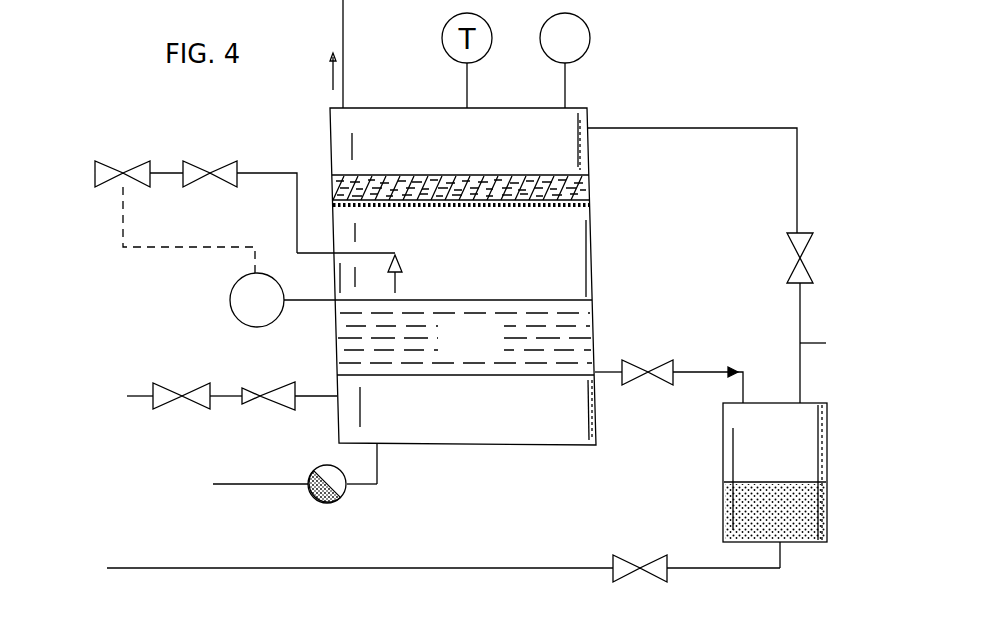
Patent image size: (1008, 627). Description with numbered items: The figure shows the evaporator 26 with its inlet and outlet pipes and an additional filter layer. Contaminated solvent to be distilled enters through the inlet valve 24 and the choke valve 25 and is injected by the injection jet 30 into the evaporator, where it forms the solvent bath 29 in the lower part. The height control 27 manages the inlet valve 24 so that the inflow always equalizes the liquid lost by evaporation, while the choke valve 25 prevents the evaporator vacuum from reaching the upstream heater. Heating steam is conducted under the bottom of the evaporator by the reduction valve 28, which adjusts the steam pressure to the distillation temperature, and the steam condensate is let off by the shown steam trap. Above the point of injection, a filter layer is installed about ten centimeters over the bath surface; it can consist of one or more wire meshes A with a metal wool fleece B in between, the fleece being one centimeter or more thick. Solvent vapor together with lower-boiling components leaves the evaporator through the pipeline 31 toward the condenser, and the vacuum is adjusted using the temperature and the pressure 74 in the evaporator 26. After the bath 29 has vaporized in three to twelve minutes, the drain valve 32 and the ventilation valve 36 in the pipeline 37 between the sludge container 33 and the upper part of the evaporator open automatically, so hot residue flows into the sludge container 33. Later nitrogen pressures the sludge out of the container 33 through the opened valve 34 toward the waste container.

The inlet valve 24 is at (113, 160).
The choke valve 25 is at (195, 160).
The evaporator 26 is at (439, 147).
The height control 27 is at (230, 300).
The reduction valve 28 is at (260, 393).
The solvent bath 29 is at (464, 337).
The injection jet 30 is at (398, 253).
The pipeline 31 is at (343, 35).
The drain valve 32 is at (645, 368).
The sludge container 33 is at (766, 457).
The valve 34 is at (635, 558).
The ventilation valve 36 is at (793, 270).
The pipeline 37 is at (733, 127).
The pressure 74 is at (590, 33).
The wire mesh A is at (581, 218).
The metal wool fleece B is at (583, 188).